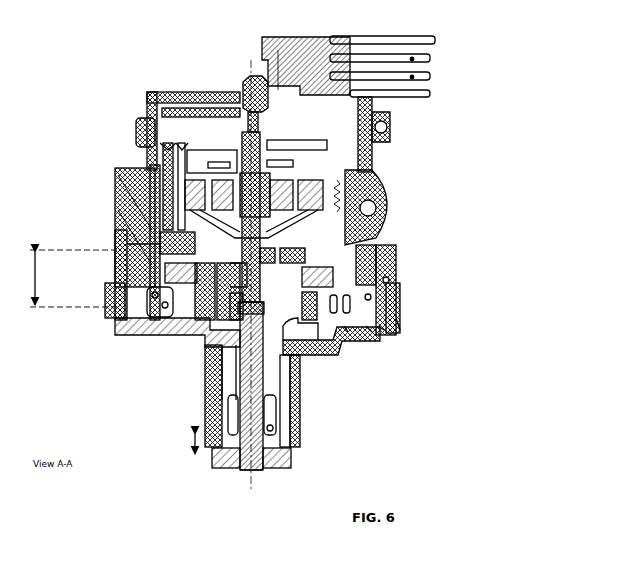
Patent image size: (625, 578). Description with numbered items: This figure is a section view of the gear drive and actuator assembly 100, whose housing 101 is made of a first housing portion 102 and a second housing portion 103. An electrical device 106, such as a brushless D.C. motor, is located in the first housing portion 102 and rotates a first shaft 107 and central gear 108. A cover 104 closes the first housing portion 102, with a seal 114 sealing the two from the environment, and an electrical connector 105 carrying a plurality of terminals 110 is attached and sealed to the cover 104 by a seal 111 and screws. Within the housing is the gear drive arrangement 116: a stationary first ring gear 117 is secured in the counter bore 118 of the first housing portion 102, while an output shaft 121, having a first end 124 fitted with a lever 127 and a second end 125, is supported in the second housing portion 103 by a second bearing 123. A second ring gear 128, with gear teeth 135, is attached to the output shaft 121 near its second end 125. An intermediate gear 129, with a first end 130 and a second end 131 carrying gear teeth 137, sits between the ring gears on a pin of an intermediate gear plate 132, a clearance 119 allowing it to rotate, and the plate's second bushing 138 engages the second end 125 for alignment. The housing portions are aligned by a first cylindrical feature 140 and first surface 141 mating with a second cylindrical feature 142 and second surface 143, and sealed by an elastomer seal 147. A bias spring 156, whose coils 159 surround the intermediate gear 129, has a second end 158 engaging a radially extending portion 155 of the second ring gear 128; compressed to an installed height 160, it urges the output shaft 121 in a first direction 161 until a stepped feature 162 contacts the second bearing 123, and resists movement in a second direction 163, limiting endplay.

The gear drive and actuator assembly 100 is at (88, 172).
The housing 101 is at (105, 208).
The first housing portion 102 is at (382, 143).
The second housing portion 103 is at (332, 357).
The cover 104 is at (147, 98).
The electrical connector 105 is at (270, 72).
The electrical device 106 is at (150, 165).
The first shaft 107 is at (352, 232).
The central gear 108 is at (372, 255).
The terminals 110 is at (414, 59).
The seal 111 is at (256, 84).
The seal 114 is at (138, 128).
The gear drive arrangement 116 is at (388, 278).
The first ring gear 117 is at (192, 272).
The counter bore 118 is at (388, 262).
The clearance 119 is at (125, 200).
The output shaft 121 is at (292, 398).
The second bearing 123 is at (278, 420).
The first end 124 is at (266, 476).
The second end 125 is at (264, 306).
The lever 127 is at (292, 460).
The second ring gear 128 is at (197, 300).
The intermediate gear 129 is at (190, 282).
The first end 130 is at (150, 240).
The second end 131 is at (165, 335).
The intermediate gear plate 132 is at (200, 350).
The gear teeth 135 is at (212, 350).
The gear teeth 137 is at (150, 246).
The second bushing 138 is at (226, 342).
The first cylindrical feature 140 is at (118, 328).
The first surface 141 is at (400, 320).
The second cylindrical feature 142 is at (394, 302).
The second surface 143 is at (108, 304).
The elastomer seal 147 is at (380, 328).
The radially extending portion 155 is at (370, 330).
The bias spring 156 is at (347, 330).
The second end 158 is at (132, 336).
The coils 159 is at (372, 297).
The installed height 160 is at (72, 278).
The first direction 161 is at (192, 468).
The stepped feature 162 is at (226, 404).
The second direction 163 is at (192, 437).